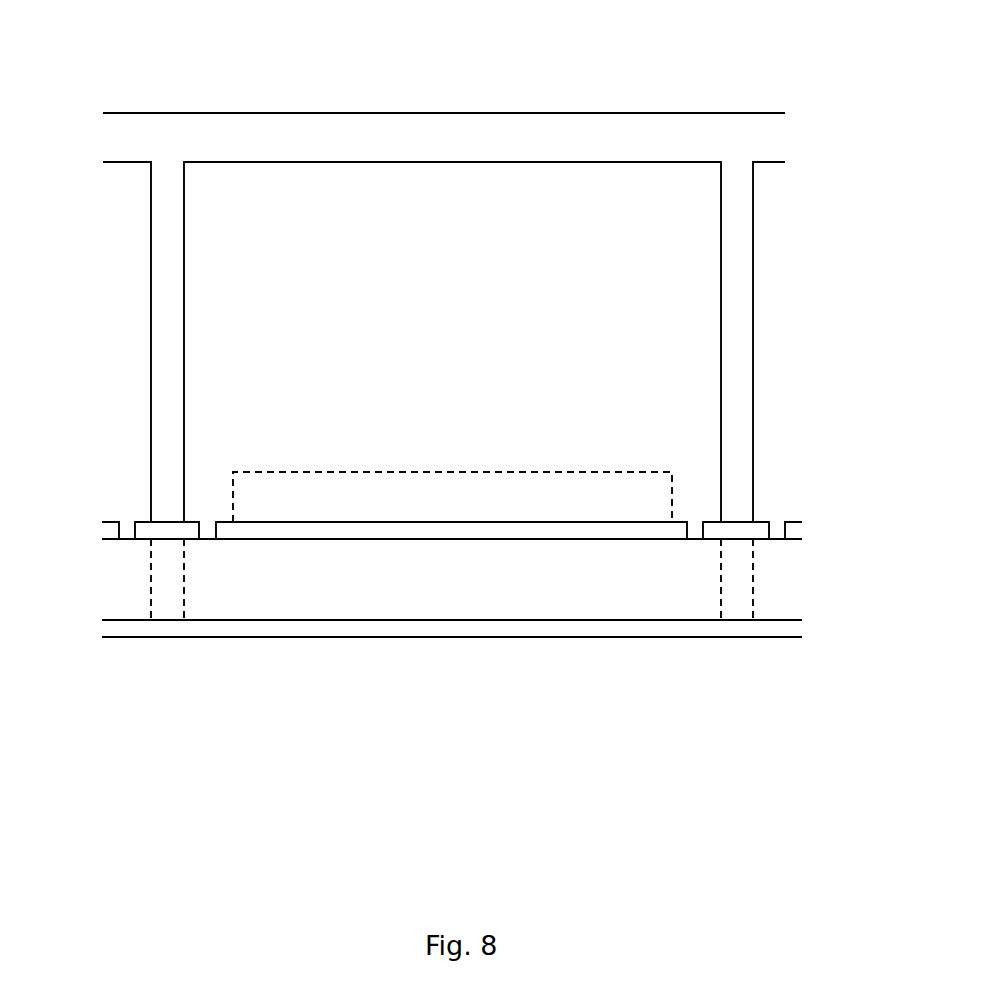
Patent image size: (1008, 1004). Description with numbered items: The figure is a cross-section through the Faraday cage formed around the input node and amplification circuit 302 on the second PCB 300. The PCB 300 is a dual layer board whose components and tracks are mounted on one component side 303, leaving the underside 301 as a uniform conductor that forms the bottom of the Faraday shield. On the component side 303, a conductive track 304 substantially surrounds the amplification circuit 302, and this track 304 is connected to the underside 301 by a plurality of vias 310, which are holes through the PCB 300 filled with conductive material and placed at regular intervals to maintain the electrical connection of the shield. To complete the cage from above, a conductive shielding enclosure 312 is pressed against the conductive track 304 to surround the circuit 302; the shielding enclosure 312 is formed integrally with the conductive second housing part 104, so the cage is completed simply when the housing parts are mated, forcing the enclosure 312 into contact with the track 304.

The second housing part 104 is at (461, 130).
The conductive shielding enclosure 312 is at (738, 256).
The component side 303 is at (793, 522).
The conductive track 304 is at (143, 525).
The input node and amplification circuit 302 is at (387, 493).
The vias 310 is at (171, 594).
The second PCB 300 is at (489, 590).
The underside 301 is at (769, 628).